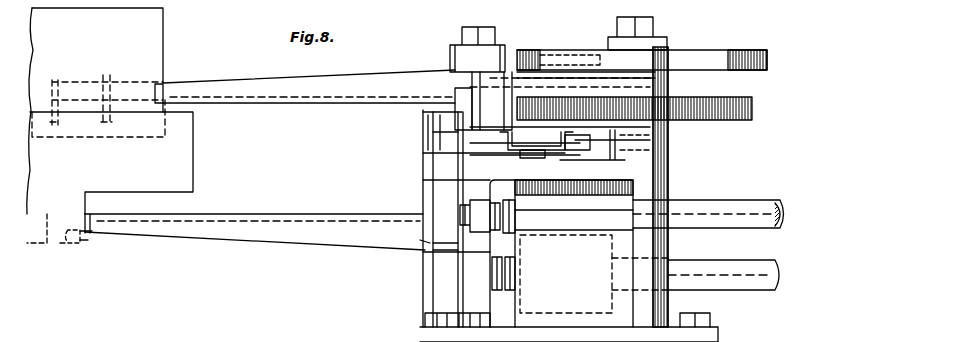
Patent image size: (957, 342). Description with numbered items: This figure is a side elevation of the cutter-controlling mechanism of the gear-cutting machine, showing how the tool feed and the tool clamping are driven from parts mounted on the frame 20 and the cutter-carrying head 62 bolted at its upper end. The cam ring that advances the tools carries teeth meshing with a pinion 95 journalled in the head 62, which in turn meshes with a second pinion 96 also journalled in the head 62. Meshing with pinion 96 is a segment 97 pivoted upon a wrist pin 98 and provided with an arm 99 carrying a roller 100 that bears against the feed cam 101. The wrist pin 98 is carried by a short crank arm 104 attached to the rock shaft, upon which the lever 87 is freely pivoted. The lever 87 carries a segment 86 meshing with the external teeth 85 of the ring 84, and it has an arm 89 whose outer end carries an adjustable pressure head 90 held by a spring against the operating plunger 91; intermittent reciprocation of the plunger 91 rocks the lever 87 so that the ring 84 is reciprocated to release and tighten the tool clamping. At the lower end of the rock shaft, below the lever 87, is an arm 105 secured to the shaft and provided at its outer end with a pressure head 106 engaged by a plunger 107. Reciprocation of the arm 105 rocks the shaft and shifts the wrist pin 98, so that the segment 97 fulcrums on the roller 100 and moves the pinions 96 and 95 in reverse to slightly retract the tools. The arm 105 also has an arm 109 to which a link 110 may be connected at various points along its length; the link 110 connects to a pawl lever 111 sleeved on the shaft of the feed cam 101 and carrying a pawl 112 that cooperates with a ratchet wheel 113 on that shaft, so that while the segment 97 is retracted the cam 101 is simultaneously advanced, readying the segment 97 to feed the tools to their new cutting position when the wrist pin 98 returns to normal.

The frame 20 is at (193, 156).
The cutter-carrying head 62 is at (163, 37).
The ring 84 is at (58, 248).
The external teeth 85 is at (84, 244).
The segment 86 is at (90, 233).
The lever 87 is at (302, 243).
The arm 89 is at (473, 236).
The adjustable pressure head 90 is at (500, 204).
The operating plunger 91 is at (740, 200).
The pinion 95 is at (83, 80).
The pinion 96 is at (135, 82).
The segment 97 is at (370, 104).
The wrist pin 98 is at (478, 27).
The arm 99 is at (563, 73).
The roller 100 is at (662, 62).
The feed cam 101 is at (742, 43).
The short crank arm 104 is at (430, 131).
The arm 105 is at (437, 285).
The pressure head 106 is at (505, 285).
The plunger 107 is at (725, 256).
The arm 109 is at (568, 138).
The link 110 is at (533, 141).
The pawl lever 111 is at (475, 108).
The pawl 112 is at (511, 75).
The ratchet wheel 113 is at (745, 119).